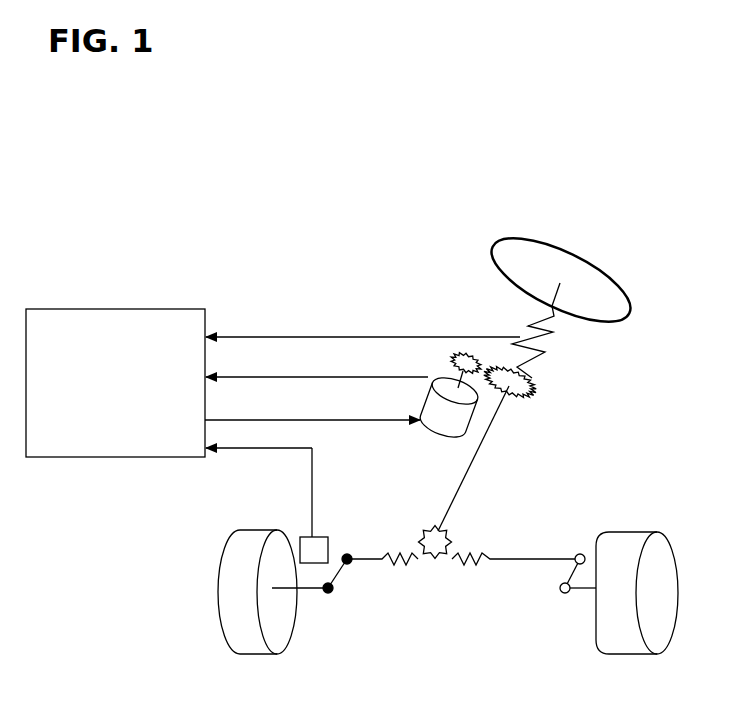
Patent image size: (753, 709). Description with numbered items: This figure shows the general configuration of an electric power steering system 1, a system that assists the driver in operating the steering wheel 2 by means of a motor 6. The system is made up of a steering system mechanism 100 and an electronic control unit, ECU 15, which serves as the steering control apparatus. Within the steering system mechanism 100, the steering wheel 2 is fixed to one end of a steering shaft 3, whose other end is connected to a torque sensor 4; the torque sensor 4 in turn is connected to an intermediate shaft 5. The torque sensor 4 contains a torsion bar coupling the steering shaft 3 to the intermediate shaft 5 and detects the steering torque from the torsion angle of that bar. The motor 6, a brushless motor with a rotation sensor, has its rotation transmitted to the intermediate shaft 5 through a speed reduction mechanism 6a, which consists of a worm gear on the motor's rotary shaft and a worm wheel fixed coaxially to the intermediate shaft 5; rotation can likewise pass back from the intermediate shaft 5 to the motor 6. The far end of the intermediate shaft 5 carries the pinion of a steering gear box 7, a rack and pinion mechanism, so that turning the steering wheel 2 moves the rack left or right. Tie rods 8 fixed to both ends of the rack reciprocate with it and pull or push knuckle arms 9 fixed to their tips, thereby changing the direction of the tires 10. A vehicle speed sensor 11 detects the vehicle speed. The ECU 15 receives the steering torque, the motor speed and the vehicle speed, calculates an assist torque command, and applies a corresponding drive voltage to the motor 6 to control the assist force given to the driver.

The electric power steering system 1 is at (574, 176).
The steering system mechanism 100 is at (451, 291).
The steering wheel 2 is at (608, 278).
The steering shaft 3 is at (548, 307).
The torque sensor 4 is at (549, 337).
The intermediate shaft 5 is at (488, 436).
The motor 6 is at (436, 426).
The speed reduction mechanism 6a is at (550, 385).
The steering gear box 7 is at (464, 535).
The tie rods 8 is at (365, 562).
The knuckle arms 9 is at (316, 593).
The tires 10 is at (217, 590).
The vehicle speed sensor 11 is at (322, 537).
The electronic control unit (ECU) 15 is at (138, 309).